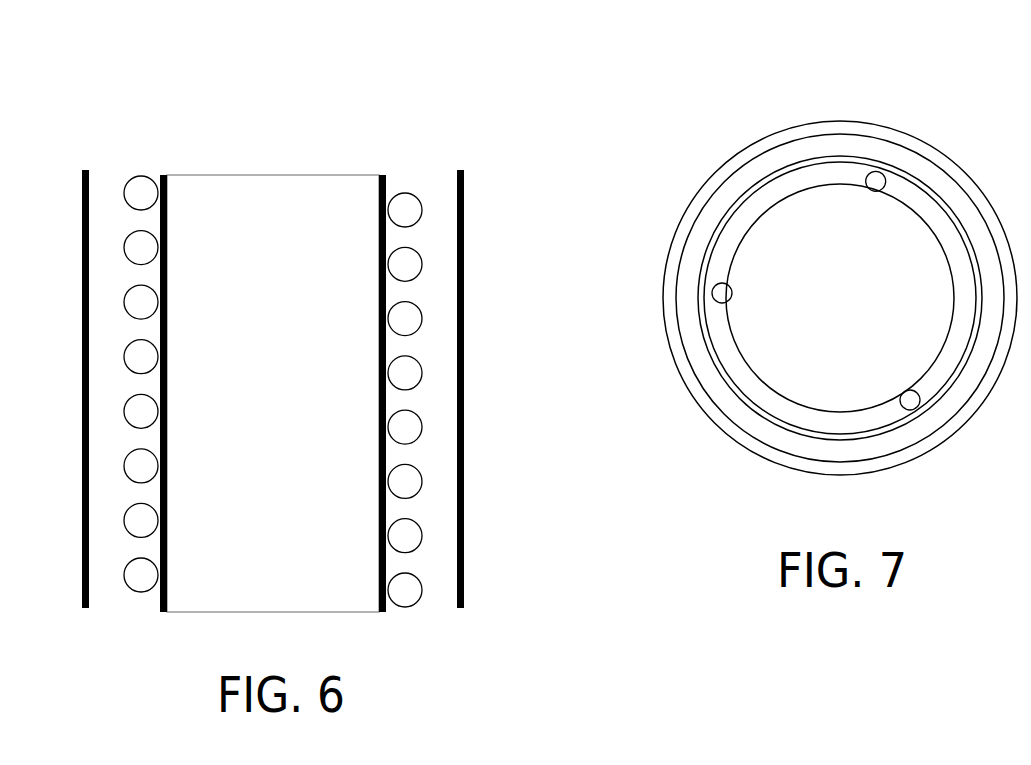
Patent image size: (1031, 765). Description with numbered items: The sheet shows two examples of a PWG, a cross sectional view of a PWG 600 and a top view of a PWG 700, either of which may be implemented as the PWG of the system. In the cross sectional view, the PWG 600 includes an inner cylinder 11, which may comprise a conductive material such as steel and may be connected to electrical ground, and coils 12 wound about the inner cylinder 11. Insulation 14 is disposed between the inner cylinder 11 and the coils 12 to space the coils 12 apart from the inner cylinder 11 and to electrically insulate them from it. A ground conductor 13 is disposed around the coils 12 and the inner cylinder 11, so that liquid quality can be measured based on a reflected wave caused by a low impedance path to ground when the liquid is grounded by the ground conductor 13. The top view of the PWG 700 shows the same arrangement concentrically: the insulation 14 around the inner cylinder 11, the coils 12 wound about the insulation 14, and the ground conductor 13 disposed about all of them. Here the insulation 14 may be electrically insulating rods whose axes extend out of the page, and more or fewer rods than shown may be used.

In FIG. 6, the inner cylinder 11 is at (283, 417).
In FIG. 7, the inner cylinder 11 is at (852, 325).
In FIG. 6, the coils 12 is at (405, 210).
In FIG. 7, the coils 12 is at (707, 348).
In FIG. 6, the ground conductor 13 is at (466, 582).
In FIG. 7, the ground conductor 13 is at (768, 138).
In FIG. 6, the insulation 14 is at (160, 547).
In FIG. 7, the insulation 14 is at (713, 287).
In FIG. 6, the PWG 600 is at (149, 106).
In FIG. 7, the PWG 700 is at (947, 83).